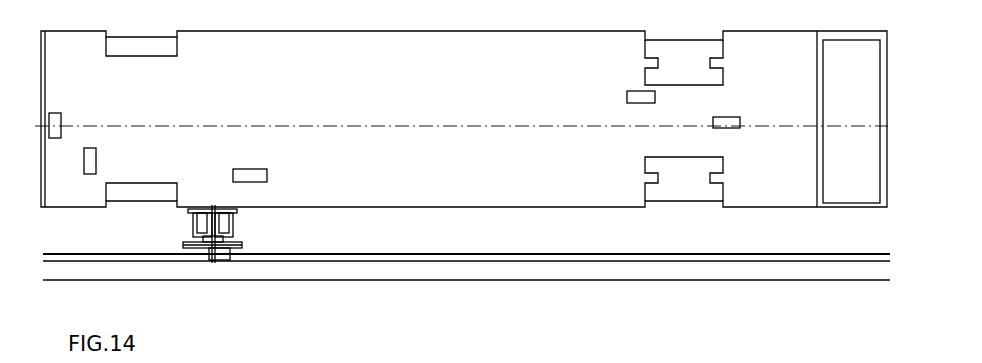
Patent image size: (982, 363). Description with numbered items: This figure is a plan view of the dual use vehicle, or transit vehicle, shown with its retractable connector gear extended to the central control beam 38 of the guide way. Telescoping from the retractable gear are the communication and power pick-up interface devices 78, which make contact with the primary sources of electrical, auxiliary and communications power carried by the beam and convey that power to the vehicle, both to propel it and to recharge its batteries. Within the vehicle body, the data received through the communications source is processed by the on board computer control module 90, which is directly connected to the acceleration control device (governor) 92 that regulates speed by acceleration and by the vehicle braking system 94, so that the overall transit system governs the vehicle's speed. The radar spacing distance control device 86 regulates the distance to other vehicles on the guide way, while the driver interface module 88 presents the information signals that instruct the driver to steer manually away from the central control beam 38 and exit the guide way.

The central control beam 38 is at (445, 281).
The communication and power pick-up interface device 78 is at (220, 276).
The radar spacing distance control device 86 is at (58, 103).
The driver interface module 88 is at (89, 145).
The on board computer control module 90 is at (254, 157).
The acceleration control device (governor) 92 is at (703, 122).
The vehicle braking system 94 is at (617, 98).